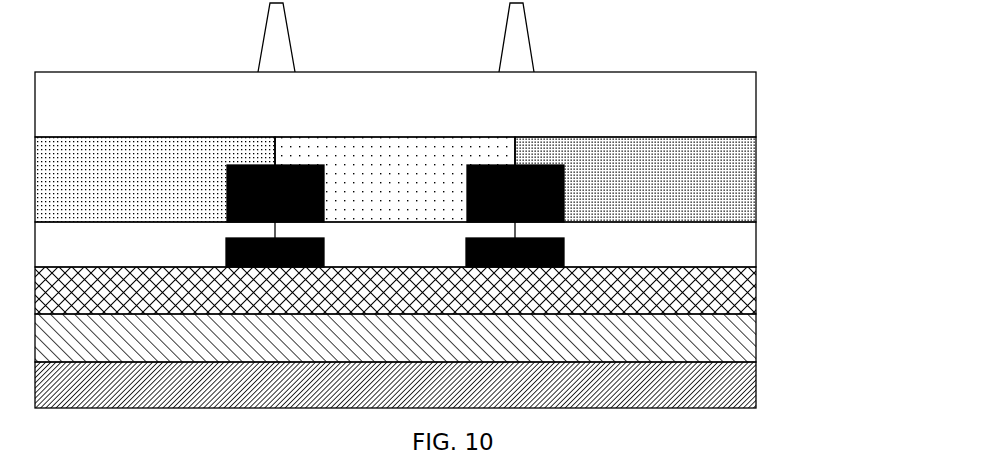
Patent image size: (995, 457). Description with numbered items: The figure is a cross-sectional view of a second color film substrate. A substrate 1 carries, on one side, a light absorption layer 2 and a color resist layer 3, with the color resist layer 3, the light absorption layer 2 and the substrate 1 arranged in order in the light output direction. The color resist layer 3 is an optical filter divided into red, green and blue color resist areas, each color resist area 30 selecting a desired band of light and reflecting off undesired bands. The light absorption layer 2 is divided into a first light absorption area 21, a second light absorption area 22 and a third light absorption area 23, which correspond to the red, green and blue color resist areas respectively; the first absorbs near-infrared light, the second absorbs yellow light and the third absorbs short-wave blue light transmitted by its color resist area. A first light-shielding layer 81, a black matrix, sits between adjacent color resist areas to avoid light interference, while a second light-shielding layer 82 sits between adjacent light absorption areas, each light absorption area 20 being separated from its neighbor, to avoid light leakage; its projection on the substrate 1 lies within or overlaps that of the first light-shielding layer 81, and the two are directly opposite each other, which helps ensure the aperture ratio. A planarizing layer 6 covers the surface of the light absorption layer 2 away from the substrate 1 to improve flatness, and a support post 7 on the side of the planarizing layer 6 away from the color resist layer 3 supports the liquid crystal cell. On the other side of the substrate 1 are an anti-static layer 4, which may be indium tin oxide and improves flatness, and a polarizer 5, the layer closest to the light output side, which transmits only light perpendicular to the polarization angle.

The substrate 1 is at (756, 291).
The light absorption layer 2 is at (451, 244).
The light absorption area 20 is at (756, 250).
The first light absorption area 21 is at (130, 244).
The second light absorption area 22 is at (395, 244).
The third light absorption area 23 is at (660, 244).
The color resist layer 3 is at (451, 179).
The color resist area 30 is at (756, 183).
The anti-static layer 4 is at (756, 337).
The polarizer 5 is at (756, 388).
The planarizing layer 6 is at (756, 97).
The support post 7 is at (530, 42).
The first light-shielding layer 81 is at (564, 165).
The second light-shielding layer 82 is at (564, 238).